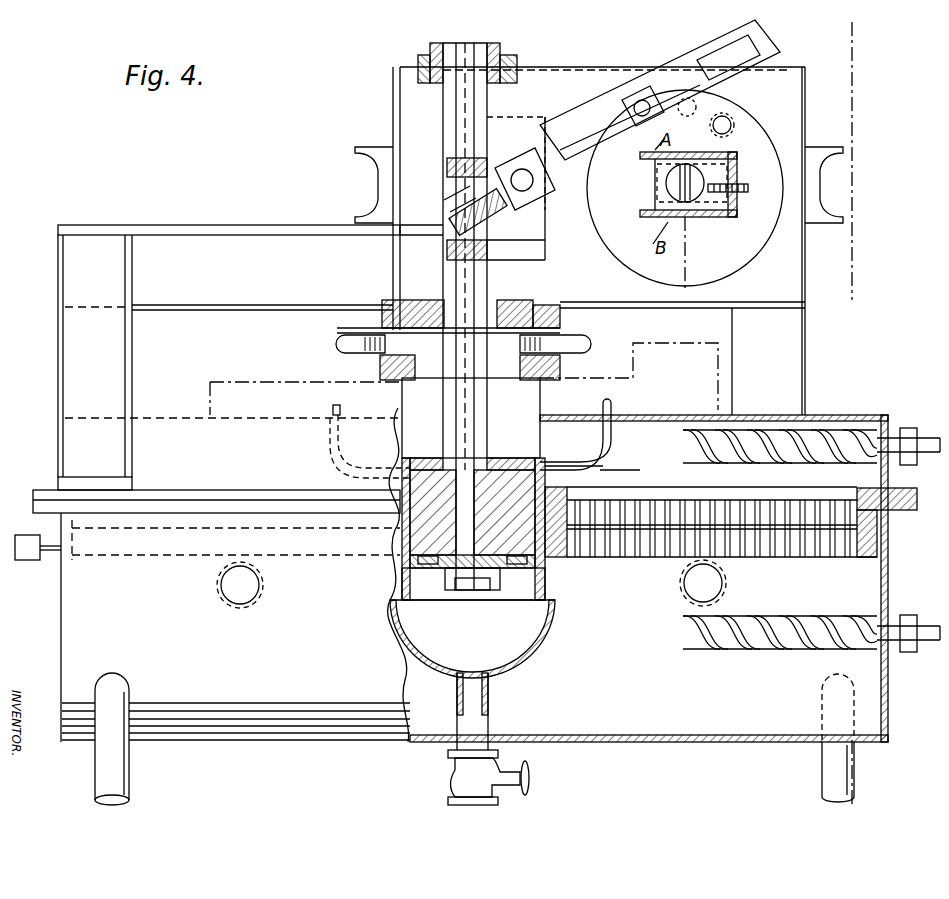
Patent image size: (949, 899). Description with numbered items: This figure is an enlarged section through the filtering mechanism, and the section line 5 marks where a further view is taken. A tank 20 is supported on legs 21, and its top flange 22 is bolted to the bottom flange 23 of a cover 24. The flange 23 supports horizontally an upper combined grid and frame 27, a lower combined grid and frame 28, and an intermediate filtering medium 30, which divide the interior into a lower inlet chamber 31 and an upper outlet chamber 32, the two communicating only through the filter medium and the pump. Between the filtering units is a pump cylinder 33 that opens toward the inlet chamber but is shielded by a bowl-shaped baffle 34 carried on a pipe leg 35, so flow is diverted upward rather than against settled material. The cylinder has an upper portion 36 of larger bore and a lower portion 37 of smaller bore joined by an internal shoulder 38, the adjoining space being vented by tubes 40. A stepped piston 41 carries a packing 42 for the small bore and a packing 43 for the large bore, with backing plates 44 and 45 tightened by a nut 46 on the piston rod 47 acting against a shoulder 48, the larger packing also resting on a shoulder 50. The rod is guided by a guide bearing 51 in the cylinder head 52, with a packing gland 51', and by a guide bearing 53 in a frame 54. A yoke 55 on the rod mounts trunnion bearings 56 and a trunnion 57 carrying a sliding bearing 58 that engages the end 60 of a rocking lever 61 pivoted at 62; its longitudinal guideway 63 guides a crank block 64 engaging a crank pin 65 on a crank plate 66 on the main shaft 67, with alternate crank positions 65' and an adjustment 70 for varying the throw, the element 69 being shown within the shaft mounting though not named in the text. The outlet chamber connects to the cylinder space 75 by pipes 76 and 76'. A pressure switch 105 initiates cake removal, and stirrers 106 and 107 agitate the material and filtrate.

The section line 5- 5 is at (828, 33).
The tank 20 is at (889, 680).
The legs 21 is at (126, 772).
The top flange 22 is at (886, 514).
The bottom flange 23 is at (43, 495).
The cover 24 is at (826, 415).
The upper combined grid and frame 27 is at (740, 500).
The lower combined grid and frame 28 is at (790, 560).
The filtering medium 30 is at (790, 520).
The lower inlet chamber 31 is at (780, 648).
The upper outlet chamber 32 is at (771, 455).
The pump cylinder 33 is at (548, 582).
The bowl-shaped baffle 34 is at (540, 640).
The pipe leg 35 is at (490, 722).
The upper cylinder portion 36 is at (532, 386).
The lower cylinder portion 37 is at (525, 592).
The internal shoulder 38 is at (604, 471).
The tubes 40 is at (613, 406).
The piston 41 is at (560, 502).
The packing 42 is at (426, 590).
The packing 43 is at (538, 463).
The packing backing plate 44 is at (510, 578).
The packing backing plate 45 is at (428, 459).
The nut 46 is at (470, 592).
The piston rod 47 is at (476, 425).
The shoulder 48 is at (506, 460).
The shoulder 50 is at (405, 478).
The guide bearing 51 is at (463, 342).
The packing gland 51' is at (471, 293).
The cylinder head 52 is at (537, 306).
The guide bearing 53 is at (502, 62).
The frame 54 is at (393, 93).
The yoke 55 is at (447, 186).
The trunnion bearings 56 is at (448, 208).
The trunnion 57 is at (495, 225).
The sliding bearing 58 is at (455, 228).
The end of rocking lever 60 is at (499, 210).
The rocking lever 61 is at (607, 112).
The pivot 62 is at (523, 170).
The longitudinal guideway 63 is at (706, 62).
The crank block 64 is at (641, 98).
The crank pin 65 is at (690, 121).
The alternate crank positions 65' is at (747, 112).
The crank plate 66 is at (660, 262).
The main shaft 67 is at (700, 175).
The piston rod 69 is at (662, 196).
The adjustment 70 is at (667, 183).
The cylinder space 75 is at (471, 418).
The pipe 76 is at (653, 376).
The branch pipe 76' is at (281, 394).
The pressure switch 105 is at (30, 562).
The stirrer 106 is at (885, 612).
The stirrer 107 is at (880, 425).